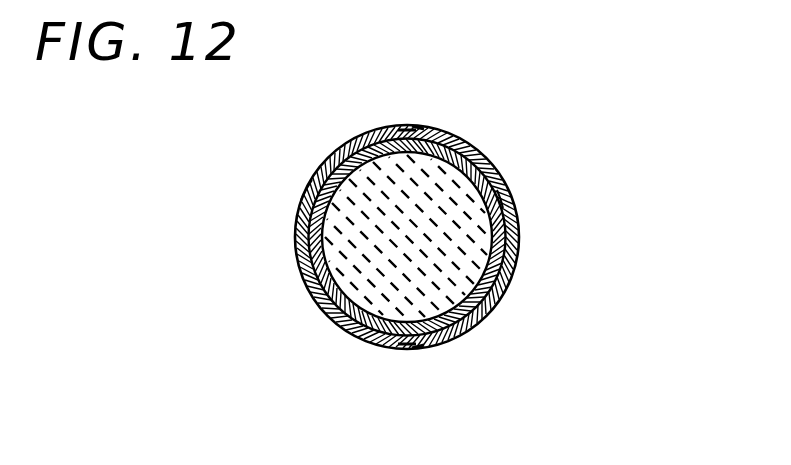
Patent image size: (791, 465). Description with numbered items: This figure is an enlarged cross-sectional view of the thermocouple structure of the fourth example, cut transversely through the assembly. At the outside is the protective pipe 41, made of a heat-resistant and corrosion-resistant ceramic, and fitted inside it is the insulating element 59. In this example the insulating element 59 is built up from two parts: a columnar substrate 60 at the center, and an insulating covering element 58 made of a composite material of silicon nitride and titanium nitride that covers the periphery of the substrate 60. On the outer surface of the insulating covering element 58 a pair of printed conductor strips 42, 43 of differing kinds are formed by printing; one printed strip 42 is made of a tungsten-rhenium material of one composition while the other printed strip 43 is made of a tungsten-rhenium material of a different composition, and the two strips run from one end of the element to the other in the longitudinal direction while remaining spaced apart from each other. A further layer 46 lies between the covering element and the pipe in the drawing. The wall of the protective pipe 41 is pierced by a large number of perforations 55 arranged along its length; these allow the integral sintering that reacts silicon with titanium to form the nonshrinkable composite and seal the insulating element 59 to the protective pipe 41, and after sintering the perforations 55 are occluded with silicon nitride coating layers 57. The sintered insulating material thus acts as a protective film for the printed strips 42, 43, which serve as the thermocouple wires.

The protective pipe 41 is at (488, 158).
The printed conductor strip 42 is at (340, 152).
The printed conductor strip 43 is at (347, 337).
The intermediate layer 46 is at (300, 250).
The perforations 55 is at (410, 124).
The Si3N4 coating layers 57 is at (418, 127).
The insulating covering element 58 is at (305, 188).
The insulating element 59 is at (505, 182).
The columnar substrate 60 is at (308, 290).